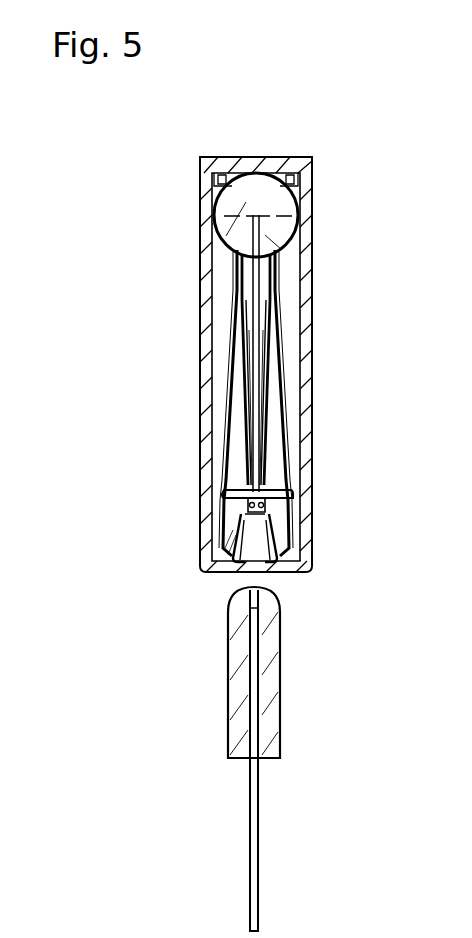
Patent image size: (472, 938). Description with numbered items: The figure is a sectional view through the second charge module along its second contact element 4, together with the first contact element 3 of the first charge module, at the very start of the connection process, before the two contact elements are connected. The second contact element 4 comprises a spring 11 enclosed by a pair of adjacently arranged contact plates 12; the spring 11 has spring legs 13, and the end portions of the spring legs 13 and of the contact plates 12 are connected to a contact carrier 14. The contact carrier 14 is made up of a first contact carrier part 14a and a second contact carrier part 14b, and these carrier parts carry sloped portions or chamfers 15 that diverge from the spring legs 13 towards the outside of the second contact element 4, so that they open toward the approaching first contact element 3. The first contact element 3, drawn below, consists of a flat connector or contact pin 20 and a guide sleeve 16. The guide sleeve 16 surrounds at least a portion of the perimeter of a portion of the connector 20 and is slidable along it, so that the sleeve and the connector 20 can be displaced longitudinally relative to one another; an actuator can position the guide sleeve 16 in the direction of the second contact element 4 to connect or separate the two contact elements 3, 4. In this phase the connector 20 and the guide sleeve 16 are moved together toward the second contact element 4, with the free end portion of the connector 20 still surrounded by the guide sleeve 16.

The first electric contact element 3 is at (183, 773).
The second electric contact element 4 is at (188, 301).
The spring 11 is at (270, 283).
The contact plates 12 is at (266, 396).
The spring legs 13 is at (228, 438).
The contact carrier 14 is at (222, 523).
The first contact carrier part 14a is at (235, 532).
The second contact carrier part 14b is at (285, 537).
The chamfers 15 is at (266, 547).
The guide sleeve 16 is at (275, 703).
The connector 20 is at (250, 648).